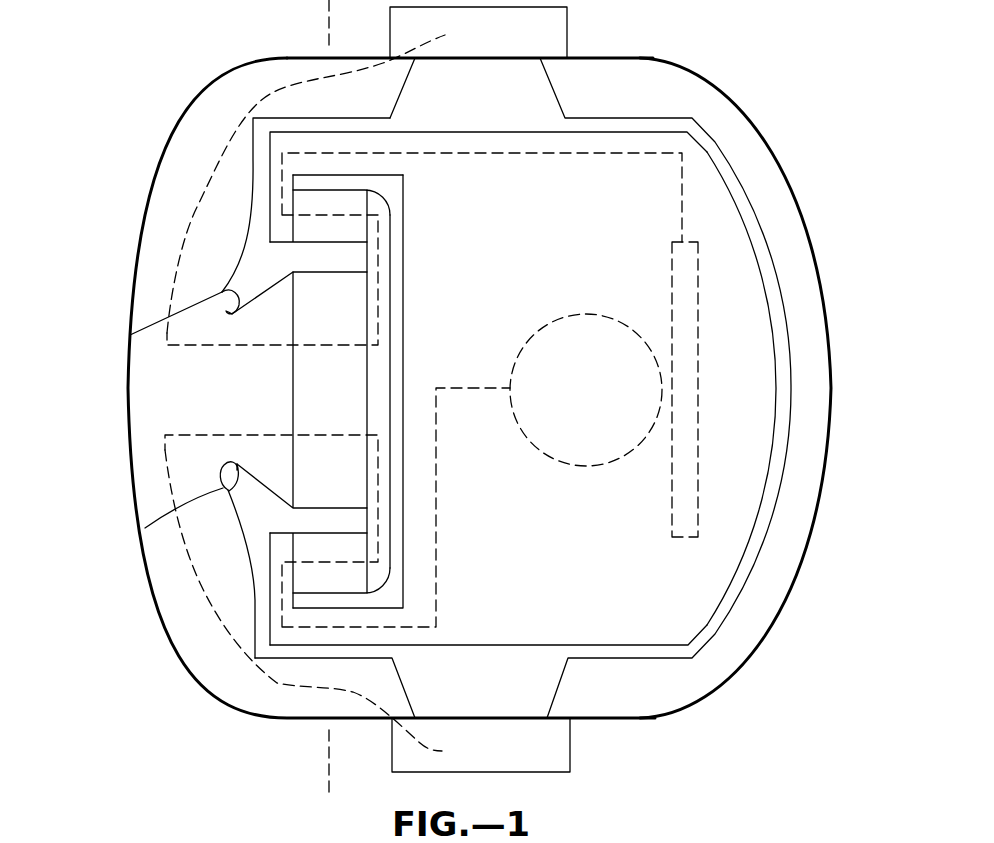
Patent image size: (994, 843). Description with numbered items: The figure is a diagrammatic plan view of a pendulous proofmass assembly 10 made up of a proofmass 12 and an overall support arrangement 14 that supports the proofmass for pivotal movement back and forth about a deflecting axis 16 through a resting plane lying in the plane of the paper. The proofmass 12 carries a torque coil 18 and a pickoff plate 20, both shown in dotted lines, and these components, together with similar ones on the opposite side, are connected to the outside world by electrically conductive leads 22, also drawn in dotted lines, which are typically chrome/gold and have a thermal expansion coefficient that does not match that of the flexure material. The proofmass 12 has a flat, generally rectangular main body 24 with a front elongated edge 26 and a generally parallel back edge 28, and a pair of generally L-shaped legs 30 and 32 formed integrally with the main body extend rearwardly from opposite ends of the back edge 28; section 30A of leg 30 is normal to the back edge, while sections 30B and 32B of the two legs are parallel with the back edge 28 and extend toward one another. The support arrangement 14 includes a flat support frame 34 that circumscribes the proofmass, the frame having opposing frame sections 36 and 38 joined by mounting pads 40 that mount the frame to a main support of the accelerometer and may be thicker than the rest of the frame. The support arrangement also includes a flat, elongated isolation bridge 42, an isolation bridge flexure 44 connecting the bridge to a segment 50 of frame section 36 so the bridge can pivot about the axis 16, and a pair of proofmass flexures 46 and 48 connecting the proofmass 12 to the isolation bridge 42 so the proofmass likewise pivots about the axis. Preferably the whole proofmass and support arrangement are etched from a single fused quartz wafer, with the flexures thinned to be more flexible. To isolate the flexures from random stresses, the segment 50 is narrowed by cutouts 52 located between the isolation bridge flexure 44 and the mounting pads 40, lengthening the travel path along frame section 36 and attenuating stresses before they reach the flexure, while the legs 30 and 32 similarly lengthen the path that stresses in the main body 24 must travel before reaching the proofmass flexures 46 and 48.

The proofmass assembly 10 is at (160, 97).
The proofmass 12 is at (697, 195).
The support arrangement 14 is at (200, 662).
The deflecting axis 16 is at (330, 757).
The torque coil 18 is at (541, 457).
The pickoff plate 20 is at (672, 527).
The electrically conductive leads 22 is at (540, 155).
The main body 24 is at (707, 583).
The front elongated edge 26 is at (775, 387).
The back edge 28 is at (397, 318).
The L-shaped leg 30 is at (311, 148).
The leg section 30A is at (358, 147).
The leg section 30B is at (282, 231).
The L-shaped leg 32 is at (298, 634).
The leg section 32B is at (277, 552).
The support frame 34 is at (124, 313).
The frame section 36 is at (148, 420).
The frame section 38 is at (817, 452).
The mounting pads 40 is at (555, 33).
The isolation bridge 42 is at (380, 392).
The isolation bridge flexure 44 is at (307, 385).
The proofmass flexure 46 is at (318, 205).
The proofmass flexure 48 is at (337, 578).
The frame segment 50 is at (263, 332).
The cutouts 52 is at (130, 335).